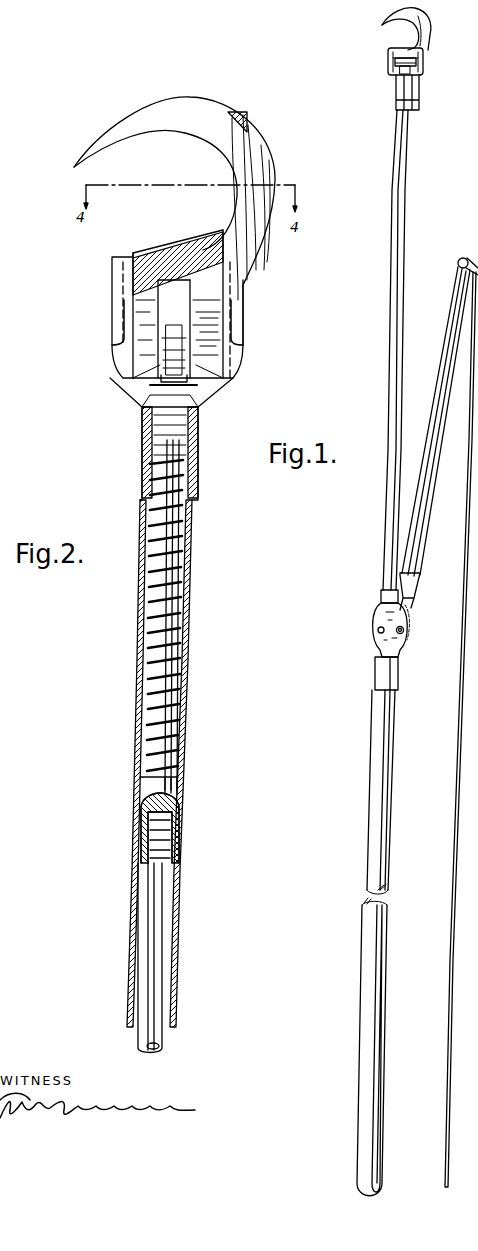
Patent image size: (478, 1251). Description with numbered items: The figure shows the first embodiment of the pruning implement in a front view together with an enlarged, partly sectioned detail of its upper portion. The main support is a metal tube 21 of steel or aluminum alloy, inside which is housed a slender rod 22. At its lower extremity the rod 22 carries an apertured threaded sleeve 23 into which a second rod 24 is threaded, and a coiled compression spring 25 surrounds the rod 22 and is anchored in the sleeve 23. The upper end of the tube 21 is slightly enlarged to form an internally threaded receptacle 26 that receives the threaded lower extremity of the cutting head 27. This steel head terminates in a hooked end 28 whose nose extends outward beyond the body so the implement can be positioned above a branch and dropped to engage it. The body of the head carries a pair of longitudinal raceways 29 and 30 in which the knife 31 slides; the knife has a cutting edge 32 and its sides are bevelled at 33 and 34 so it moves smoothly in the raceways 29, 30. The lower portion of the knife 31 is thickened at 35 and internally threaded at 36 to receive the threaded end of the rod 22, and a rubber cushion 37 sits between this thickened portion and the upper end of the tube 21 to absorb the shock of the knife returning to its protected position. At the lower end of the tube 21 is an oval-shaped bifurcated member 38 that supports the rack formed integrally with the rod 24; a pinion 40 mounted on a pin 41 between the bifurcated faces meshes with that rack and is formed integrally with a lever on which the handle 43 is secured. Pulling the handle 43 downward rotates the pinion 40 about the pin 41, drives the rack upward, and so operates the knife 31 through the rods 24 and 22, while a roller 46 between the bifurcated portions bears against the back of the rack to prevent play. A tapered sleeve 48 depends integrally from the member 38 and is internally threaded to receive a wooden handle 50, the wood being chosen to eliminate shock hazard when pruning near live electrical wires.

In FIG. 2, the metal tube 21 is at (190, 632).
In FIG. 1, the metal tube 21 is at (408, 200).
In FIG. 2, the rod 22 is at (188, 705).
In FIG. 2, the apertured threaded sleeve 23 is at (185, 782).
In FIG. 2, the second rod 24 is at (160, 905).
In FIG. 2, the coiled compression spring 25 is at (190, 560).
In FIG. 2, the receptacle 26 is at (195, 440).
In FIG. 1, the receptacle 26 is at (414, 98).
In FIG. 2, the cutting head 27 is at (240, 305).
In FIG. 1, the cutting head 27 is at (425, 62).
In FIG. 2, the hooked end 28 is at (262, 148).
In FIG. 1, the hooked end 28 is at (406, 29).
In FIG. 2, the raceway 29 is at (115, 322).
In FIG. 2, the raceway 30 is at (225, 325).
In FIG. 2, the knife 31 is at (215, 360).
In FIG. 1, the knife 31 is at (400, 70).
In FIG. 2, the cutting edge 32 is at (168, 250).
In FIG. 1, the cutting edge 32 is at (402, 50).
In FIG. 2, the bevelled side 33 is at (122, 357).
In FIG. 2, the bevelled side 34 is at (192, 365).
In FIG. 2, the thickened lower portion 35 is at (200, 390).
In FIG. 2, the internal threads 36 is at (160, 373).
In FIG. 2, the rubber cushion 37 is at (170, 386).
In FIG. 1, the bifurcated member 38 is at (378, 618).
In FIG. 1, the pinion 40 is at (410, 627).
In FIG. 1, the pin 41 is at (403, 634).
In FIG. 1, the handle 43 is at (425, 505).
In FIG. 1, the roller 46 is at (378, 630).
In FIG. 1, the tapered sleeve 48 is at (378, 674).
In FIG. 1, the wooden handle 50 is at (380, 785).